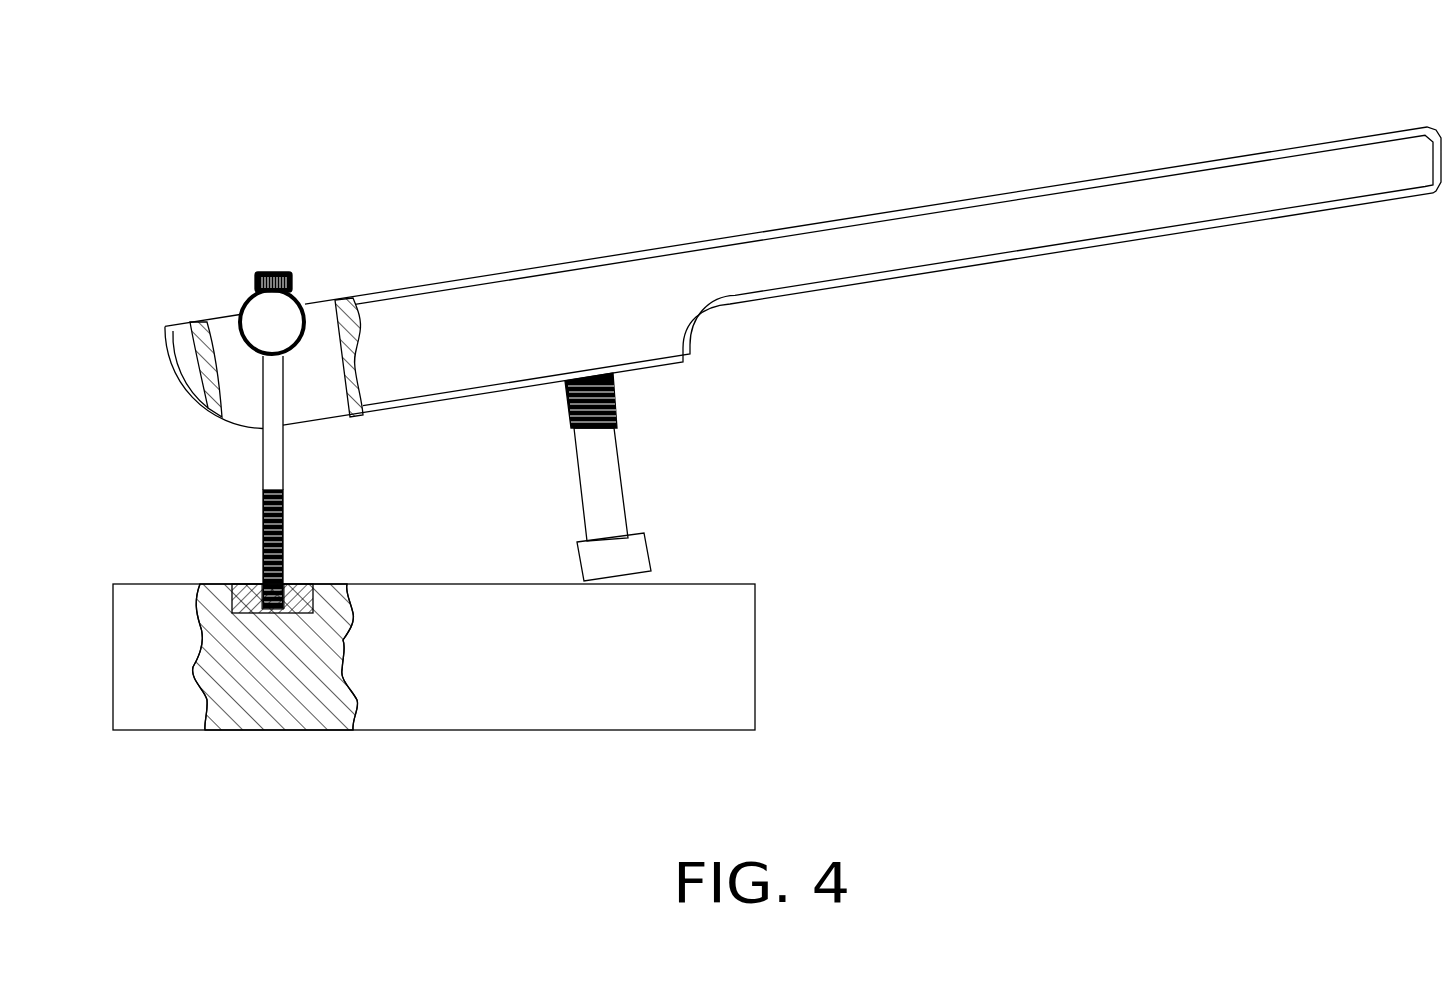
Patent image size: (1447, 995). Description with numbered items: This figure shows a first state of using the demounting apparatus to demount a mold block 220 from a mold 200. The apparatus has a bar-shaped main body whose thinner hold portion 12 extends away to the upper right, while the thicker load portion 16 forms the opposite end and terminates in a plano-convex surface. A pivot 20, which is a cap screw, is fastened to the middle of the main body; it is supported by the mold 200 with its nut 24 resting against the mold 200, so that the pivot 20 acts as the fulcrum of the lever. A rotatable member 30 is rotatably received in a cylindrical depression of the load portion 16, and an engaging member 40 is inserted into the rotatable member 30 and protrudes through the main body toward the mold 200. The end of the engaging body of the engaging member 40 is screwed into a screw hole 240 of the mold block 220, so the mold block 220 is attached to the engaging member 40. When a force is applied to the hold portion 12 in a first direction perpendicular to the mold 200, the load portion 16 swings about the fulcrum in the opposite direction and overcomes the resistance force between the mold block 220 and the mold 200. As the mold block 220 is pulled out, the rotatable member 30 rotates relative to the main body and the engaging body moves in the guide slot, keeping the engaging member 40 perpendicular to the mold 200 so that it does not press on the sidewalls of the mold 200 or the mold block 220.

The hold portion 12 is at (1385, 165).
The load portion 16 is at (187, 350).
The pivot 20 is at (600, 495).
The nut 24 is at (623, 555).
The rotatable member 30 is at (262, 320).
The engaging member 40 is at (277, 475).
The mold 200 is at (725, 660).
The mold block 220 is at (298, 590).
The screw hole 240 is at (258, 587).